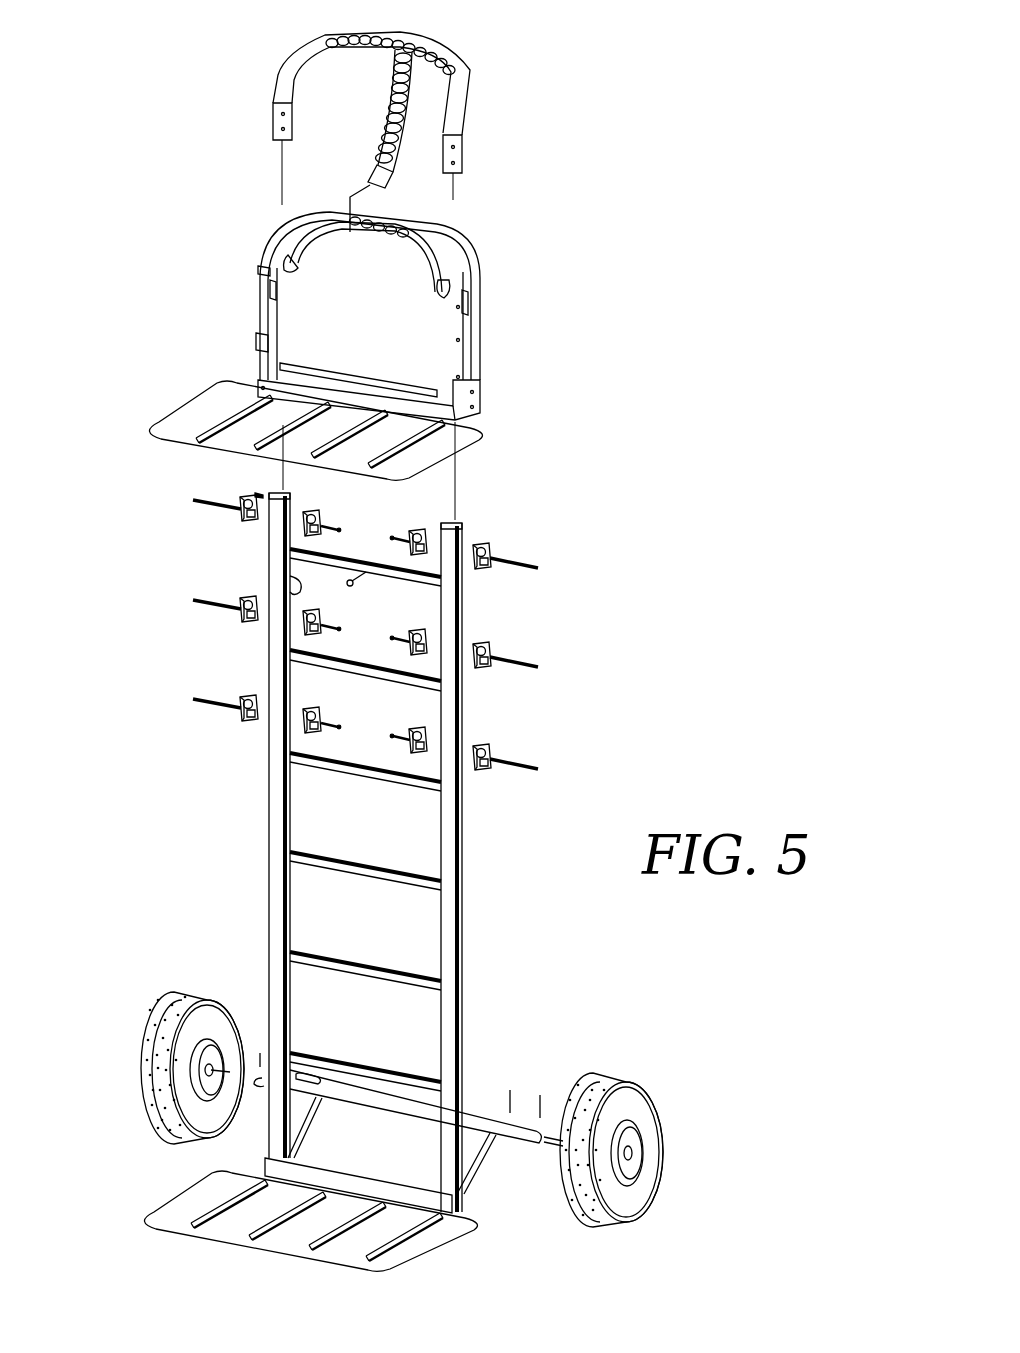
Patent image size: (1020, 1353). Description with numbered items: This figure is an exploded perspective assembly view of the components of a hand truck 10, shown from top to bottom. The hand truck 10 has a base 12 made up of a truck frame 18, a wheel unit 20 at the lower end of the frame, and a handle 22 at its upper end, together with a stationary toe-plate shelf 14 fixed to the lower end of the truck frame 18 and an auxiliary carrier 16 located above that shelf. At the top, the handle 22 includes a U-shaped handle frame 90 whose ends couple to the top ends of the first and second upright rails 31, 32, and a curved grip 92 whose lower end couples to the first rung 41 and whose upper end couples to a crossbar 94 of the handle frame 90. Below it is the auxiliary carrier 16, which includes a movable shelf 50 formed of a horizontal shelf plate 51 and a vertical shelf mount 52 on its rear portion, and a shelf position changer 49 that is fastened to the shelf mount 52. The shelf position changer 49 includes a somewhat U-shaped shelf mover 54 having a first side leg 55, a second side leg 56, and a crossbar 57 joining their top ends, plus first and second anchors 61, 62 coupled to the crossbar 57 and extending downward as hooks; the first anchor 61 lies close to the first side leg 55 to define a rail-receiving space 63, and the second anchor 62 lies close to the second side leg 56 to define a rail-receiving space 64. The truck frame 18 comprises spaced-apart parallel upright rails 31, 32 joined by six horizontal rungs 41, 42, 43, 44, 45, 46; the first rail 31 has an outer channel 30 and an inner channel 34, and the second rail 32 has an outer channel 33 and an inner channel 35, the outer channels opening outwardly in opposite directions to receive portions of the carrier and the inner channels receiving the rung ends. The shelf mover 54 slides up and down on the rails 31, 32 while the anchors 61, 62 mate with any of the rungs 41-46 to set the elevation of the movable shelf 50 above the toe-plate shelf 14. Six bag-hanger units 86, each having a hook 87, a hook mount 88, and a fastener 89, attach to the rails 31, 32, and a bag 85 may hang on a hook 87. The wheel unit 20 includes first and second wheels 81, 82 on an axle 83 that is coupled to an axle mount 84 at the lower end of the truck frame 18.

The hand truck 10 is at (648, 232).
The base 12 is at (592, 1068).
The toe-plate shelf 14 is at (187, 1188).
The auxiliary carrier 16 is at (211, 324).
The truck frame 18 is at (262, 877).
The wheel unit 20 is at (163, 1002).
The handle 22 is at (266, 78).
The outer channel 30 is at (277, 492).
The first upright rail 31 is at (265, 929).
The second upright rail 32 is at (461, 907).
The outer channel 33 is at (460, 521).
The inner channel 34 is at (286, 576).
The inner channel 35 is at (446, 520).
The first rung 41 is at (403, 588).
The rung 42 is at (322, 673).
The rung 43 is at (347, 780).
The rung 44 is at (343, 868).
The rung 45 is at (323, 972).
The rung 46 is at (369, 1073).
The shelf position changer 49 is at (477, 243).
The movable shelf 50 is at (200, 388).
The shelf plate 51 is at (177, 410).
The shelf mount 52 is at (303, 374).
The shelf mover 54 is at (249, 289).
The first side leg 55 is at (262, 268).
The second side leg 56 is at (472, 336).
The crossbar 57 is at (403, 232).
The first anchor 61 is at (296, 266).
The second anchor 62 is at (445, 290).
The rail-receiving space 63 is at (288, 286).
The rail-receiving space 64 is at (440, 311).
The first wheel 81 is at (146, 1097).
The second wheel 82 is at (638, 1193).
The axle 83 is at (400, 1110).
The axle mount 84 is at (471, 1097).
The bag 85 is at (318, 510).
The bag-hanger unit 86 is at (214, 524).
The hook 87 is at (240, 492).
The hook mount 88 is at (253, 527).
The fastener 89 is at (190, 505).
The U-shaped handle frame 90 is at (478, 116).
The curved grip 92 is at (391, 134).
The crossbar 94 is at (423, 47).